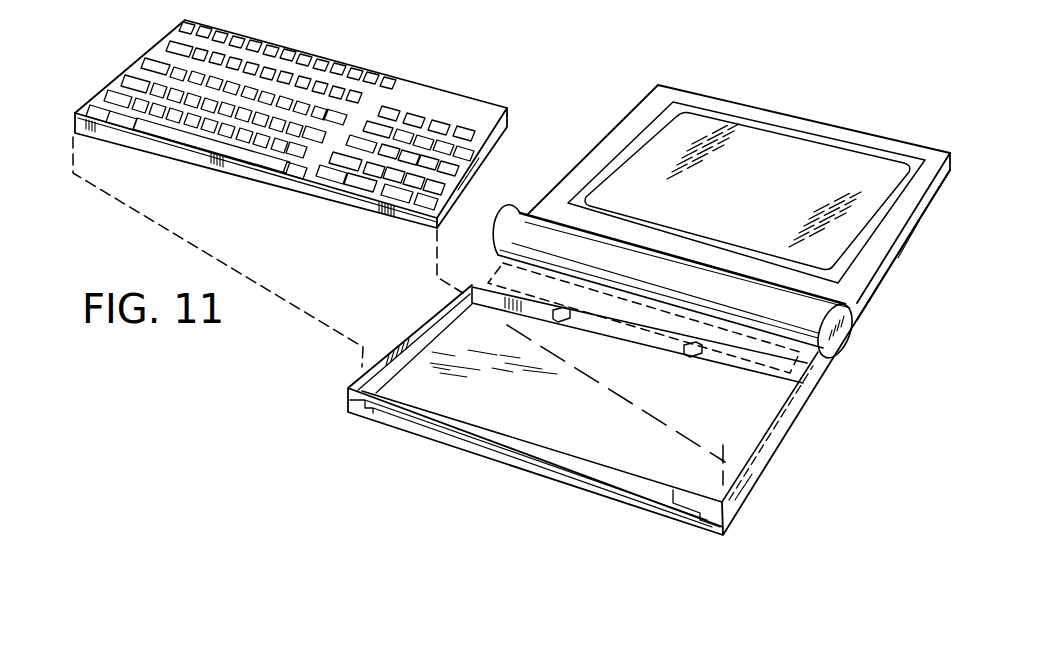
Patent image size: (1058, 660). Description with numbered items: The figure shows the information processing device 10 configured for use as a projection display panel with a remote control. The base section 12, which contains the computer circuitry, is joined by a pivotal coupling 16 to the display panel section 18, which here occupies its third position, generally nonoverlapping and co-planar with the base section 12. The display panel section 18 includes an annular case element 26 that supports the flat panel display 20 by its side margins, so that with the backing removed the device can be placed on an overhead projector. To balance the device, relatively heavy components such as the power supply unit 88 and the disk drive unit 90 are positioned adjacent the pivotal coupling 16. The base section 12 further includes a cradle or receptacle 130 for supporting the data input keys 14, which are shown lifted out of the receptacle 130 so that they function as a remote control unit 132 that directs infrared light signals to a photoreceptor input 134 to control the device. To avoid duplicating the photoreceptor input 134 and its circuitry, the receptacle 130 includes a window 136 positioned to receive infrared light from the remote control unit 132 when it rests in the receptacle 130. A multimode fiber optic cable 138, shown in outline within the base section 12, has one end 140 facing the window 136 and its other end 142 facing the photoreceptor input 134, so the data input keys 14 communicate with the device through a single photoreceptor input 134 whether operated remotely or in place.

The information processing device 10 is at (394, 289).
The base section 12 is at (818, 385).
The data input keys 14 is at (129, 67).
The pivotal coupling 16 is at (849, 328).
The display panel section 18 is at (888, 271).
The flat panel display 20 is at (643, 167).
The annular case element 26 is at (572, 184).
The power supply unit 88 is at (642, 300).
The disk drive unit 90 is at (742, 330).
The receptacle 130 is at (612, 420).
The remote control unit 132 is at (296, 179).
The photoreceptor input 134 is at (690, 500).
The window 136 is at (741, 380).
The multimode fiber optic cable 138 is at (762, 455).
The one end of fiber optic cable 140 is at (732, 367).
The other end of fiber optic cable 142 is at (677, 507).